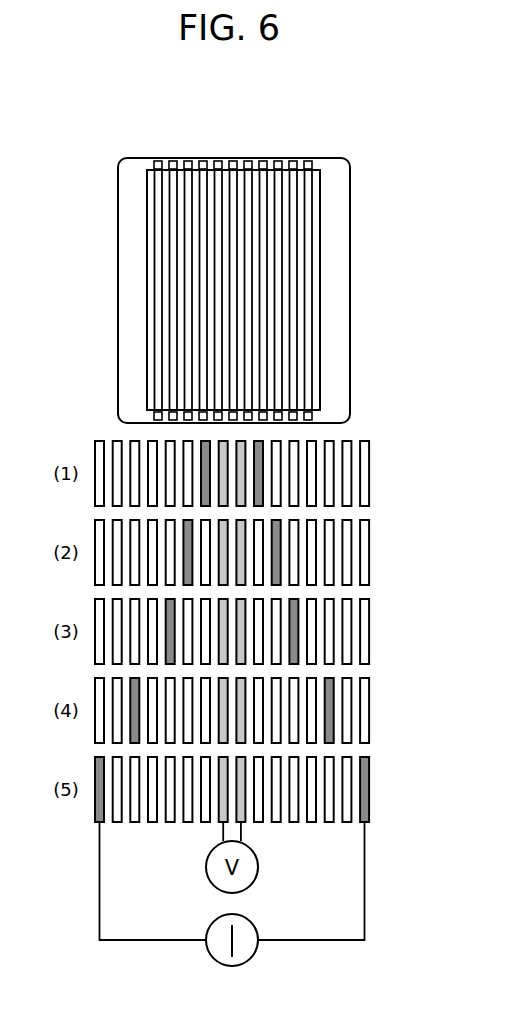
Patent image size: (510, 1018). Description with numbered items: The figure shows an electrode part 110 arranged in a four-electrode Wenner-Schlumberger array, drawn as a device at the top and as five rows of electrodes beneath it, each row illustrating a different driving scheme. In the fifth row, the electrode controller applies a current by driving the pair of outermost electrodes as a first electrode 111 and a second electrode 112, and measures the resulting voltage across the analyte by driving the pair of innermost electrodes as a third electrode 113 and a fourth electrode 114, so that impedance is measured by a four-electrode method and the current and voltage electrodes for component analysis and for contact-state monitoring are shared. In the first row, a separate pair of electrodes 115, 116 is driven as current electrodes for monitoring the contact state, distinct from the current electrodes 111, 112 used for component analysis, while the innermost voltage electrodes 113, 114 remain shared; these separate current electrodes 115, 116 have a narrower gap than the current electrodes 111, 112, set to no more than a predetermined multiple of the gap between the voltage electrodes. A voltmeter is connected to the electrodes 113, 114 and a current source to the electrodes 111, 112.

The electrode part 110 is at (263, 158).
The first electrode 111 is at (95, 806).
The second electrode 112 is at (369, 808).
The third electrode 113 is at (218, 822).
The fourth electrode 114 is at (245, 822).
The separate current electrode 115 is at (202, 446).
The separate current electrode 116 is at (258, 447).